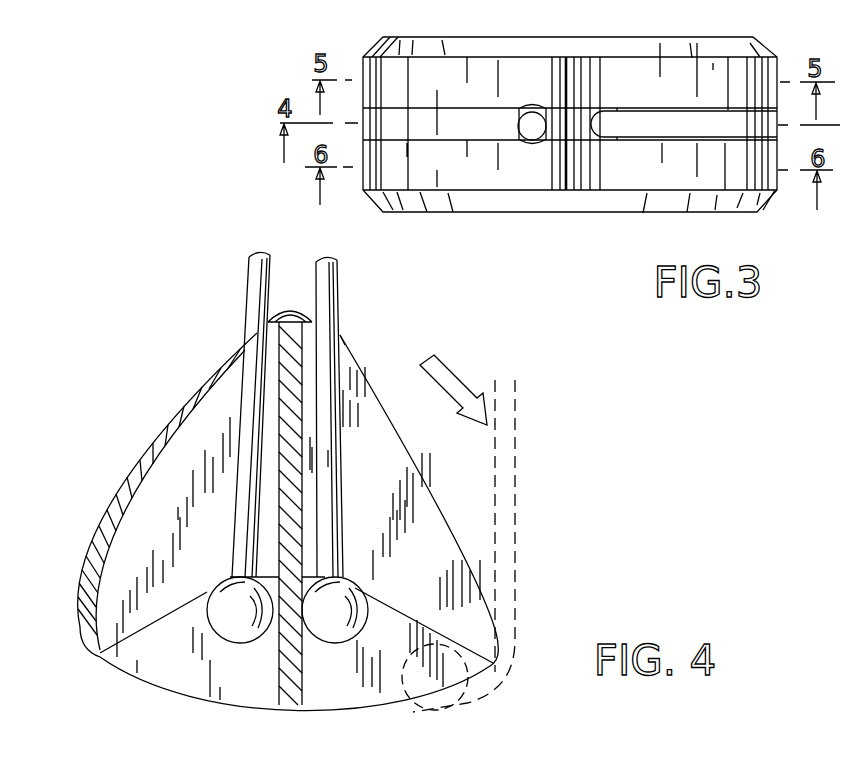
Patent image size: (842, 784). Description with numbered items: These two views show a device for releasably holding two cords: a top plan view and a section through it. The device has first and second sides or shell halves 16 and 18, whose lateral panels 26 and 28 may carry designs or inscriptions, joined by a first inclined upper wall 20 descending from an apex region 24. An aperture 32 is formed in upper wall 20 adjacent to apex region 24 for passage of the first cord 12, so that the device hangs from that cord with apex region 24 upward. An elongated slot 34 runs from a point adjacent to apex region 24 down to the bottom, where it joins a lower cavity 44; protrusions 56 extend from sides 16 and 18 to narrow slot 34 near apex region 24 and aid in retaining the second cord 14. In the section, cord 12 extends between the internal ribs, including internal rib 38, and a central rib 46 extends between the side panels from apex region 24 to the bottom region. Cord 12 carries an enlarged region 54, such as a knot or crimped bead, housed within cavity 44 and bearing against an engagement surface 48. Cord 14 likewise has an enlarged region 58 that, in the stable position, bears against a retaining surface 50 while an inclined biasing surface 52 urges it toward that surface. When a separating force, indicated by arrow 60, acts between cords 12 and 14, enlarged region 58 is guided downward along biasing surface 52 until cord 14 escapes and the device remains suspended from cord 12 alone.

In FIG. 4, the first cord 12 is at (253, 287).
In FIG. 4, the second cord 14 is at (323, 298).
In FIG. 3, the first side 16 is at (558, 183).
In FIG. 3, the second side 18 is at (712, 70).
In FIG. 4, the first inclined upper wall 20 is at (130, 520).
In FIG. 3, the apex region 24 is at (556, 108).
In FIG. 3, the lateral panel 26 is at (612, 213).
In FIG. 3, the lateral panel 28 is at (647, 37).
In FIG. 3, the aperture 32 is at (530, 130).
In FIG. 4, the aperture 32 is at (240, 347).
In FIG. 3, the elongated slot 34 is at (732, 128).
In FIG. 4, the elongated slot 34 is at (383, 377).
In FIG. 4, the internal rib 38 is at (443, 537).
In FIG. 4, the lower cavity 44 is at (253, 693).
In FIG. 4, the central rib 46 is at (290, 697).
In FIG. 4, the engagement surface 48 is at (205, 612).
In FIG. 4, the retaining surface 50 is at (353, 570).
In FIG. 4, the inclined biasing surface 52 is at (423, 617).
In FIG. 4, the enlarged region 54 is at (237, 617).
In FIG. 3, the protrusions 56 is at (616, 108).
In FIG. 4, the protrusions 56 is at (340, 340).
In FIG. 4, the enlarged region 58 is at (333, 613).
In FIG. 4, the arrow 60 is at (457, 380).